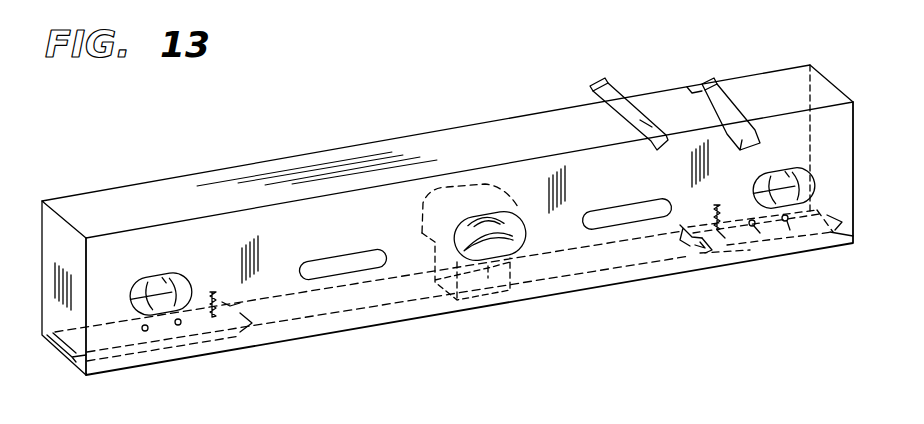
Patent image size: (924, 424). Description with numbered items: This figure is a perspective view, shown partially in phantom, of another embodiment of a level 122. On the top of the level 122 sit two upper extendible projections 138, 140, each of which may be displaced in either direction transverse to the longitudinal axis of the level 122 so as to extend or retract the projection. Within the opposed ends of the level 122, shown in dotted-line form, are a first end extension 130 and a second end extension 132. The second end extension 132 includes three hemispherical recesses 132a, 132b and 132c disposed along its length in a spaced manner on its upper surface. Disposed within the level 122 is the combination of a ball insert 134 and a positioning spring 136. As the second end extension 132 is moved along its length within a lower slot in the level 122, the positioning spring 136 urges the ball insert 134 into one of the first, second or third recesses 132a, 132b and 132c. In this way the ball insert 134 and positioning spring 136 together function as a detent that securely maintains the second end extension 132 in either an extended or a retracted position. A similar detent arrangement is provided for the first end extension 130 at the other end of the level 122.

The level 122 is at (388, 130).
The first end extension 130 is at (50, 362).
The second end extension 132 is at (741, 244).
The first hemispherical recess 132a is at (721, 249).
The second hemispherical recess 132b is at (768, 248).
The third hemispherical recess 132c is at (806, 248).
The ball insert 134 is at (678, 242).
The positioning spring 136 is at (710, 207).
The upper extendible projection 138 is at (598, 82).
The upper extendible projection 140 is at (728, 112).